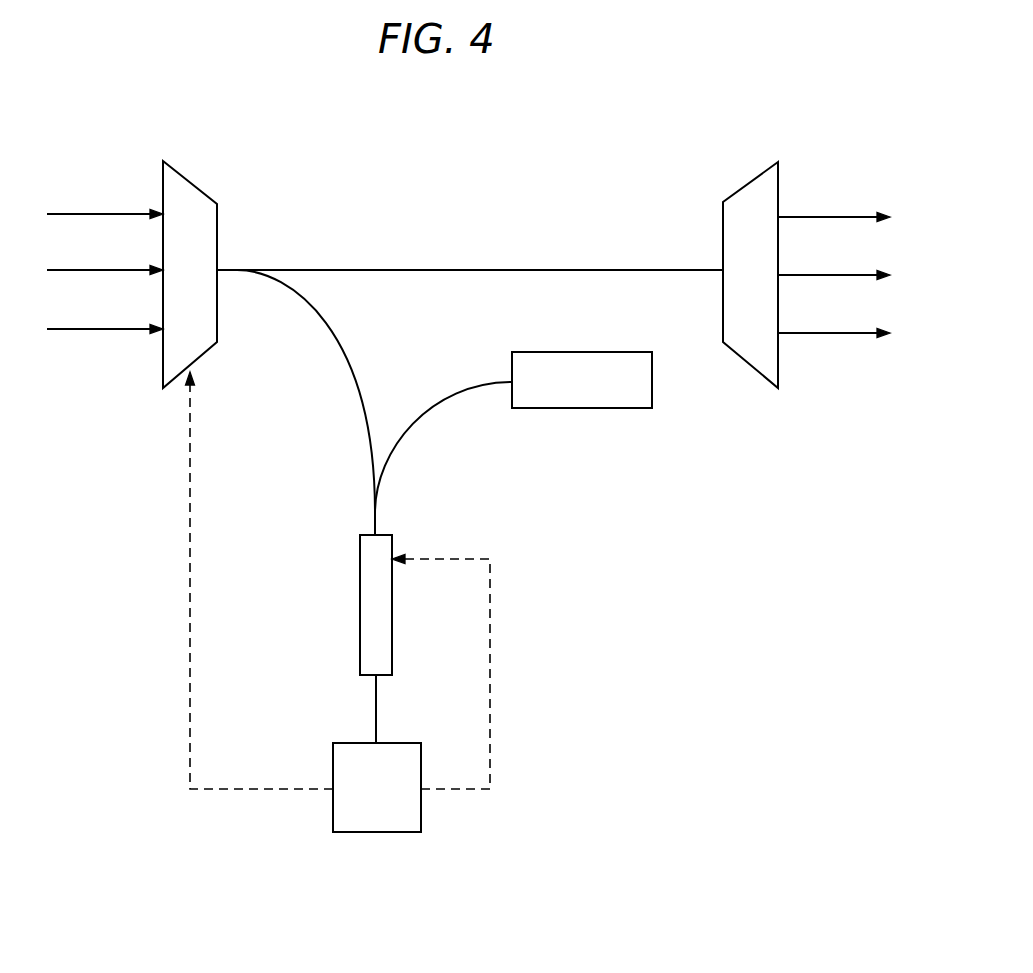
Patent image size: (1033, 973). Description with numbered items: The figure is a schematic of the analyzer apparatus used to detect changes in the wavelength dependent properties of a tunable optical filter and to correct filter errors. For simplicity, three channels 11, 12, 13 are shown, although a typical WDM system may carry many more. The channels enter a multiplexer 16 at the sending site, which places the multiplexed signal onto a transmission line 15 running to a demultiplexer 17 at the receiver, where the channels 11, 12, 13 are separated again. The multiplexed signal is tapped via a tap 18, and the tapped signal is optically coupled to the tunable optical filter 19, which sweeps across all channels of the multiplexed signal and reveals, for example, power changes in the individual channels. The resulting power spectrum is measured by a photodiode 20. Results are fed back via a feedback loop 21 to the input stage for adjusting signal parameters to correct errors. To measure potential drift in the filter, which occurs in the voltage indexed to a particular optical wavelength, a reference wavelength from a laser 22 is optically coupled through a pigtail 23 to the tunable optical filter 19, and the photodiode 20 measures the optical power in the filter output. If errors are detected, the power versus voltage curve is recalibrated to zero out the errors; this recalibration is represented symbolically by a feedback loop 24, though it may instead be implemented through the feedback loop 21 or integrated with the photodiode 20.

The channel 11 is at (77, 212).
The channel 12 is at (77, 268).
The channel 13 is at (77, 327).
The transmission line 15 is at (522, 268).
The multiplexer 16 is at (190, 180).
The demultiplexer 17 is at (780, 168).
The tap 18 is at (238, 268).
The tunable optical filter 19 is at (360, 635).
The photodiode 20 is at (333, 826).
The feedback loop 21 is at (190, 450).
The laser 22 is at (562, 352).
The pigtail 23 is at (403, 447).
The feedback loop 24 is at (490, 575).